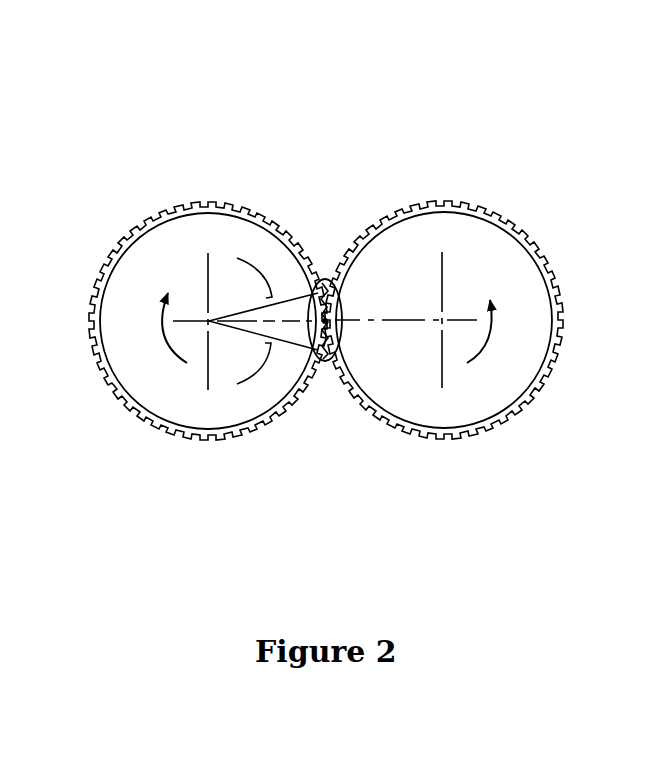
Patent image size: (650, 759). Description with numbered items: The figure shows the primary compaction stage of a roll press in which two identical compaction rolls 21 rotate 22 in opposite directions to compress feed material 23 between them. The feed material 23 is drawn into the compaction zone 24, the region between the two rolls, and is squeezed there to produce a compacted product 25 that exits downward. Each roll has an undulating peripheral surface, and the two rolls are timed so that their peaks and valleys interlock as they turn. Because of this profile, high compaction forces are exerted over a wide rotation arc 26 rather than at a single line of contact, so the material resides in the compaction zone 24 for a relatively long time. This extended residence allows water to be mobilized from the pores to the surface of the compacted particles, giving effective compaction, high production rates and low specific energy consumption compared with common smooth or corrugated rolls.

The compaction rolls 21 is at (158, 210).
The rotation 22 is at (159, 347).
The feed material 23 is at (323, 262).
The compaction zone 24 is at (345, 307).
The compacted product 25 is at (325, 388).
The rotation arc 26 is at (243, 262).